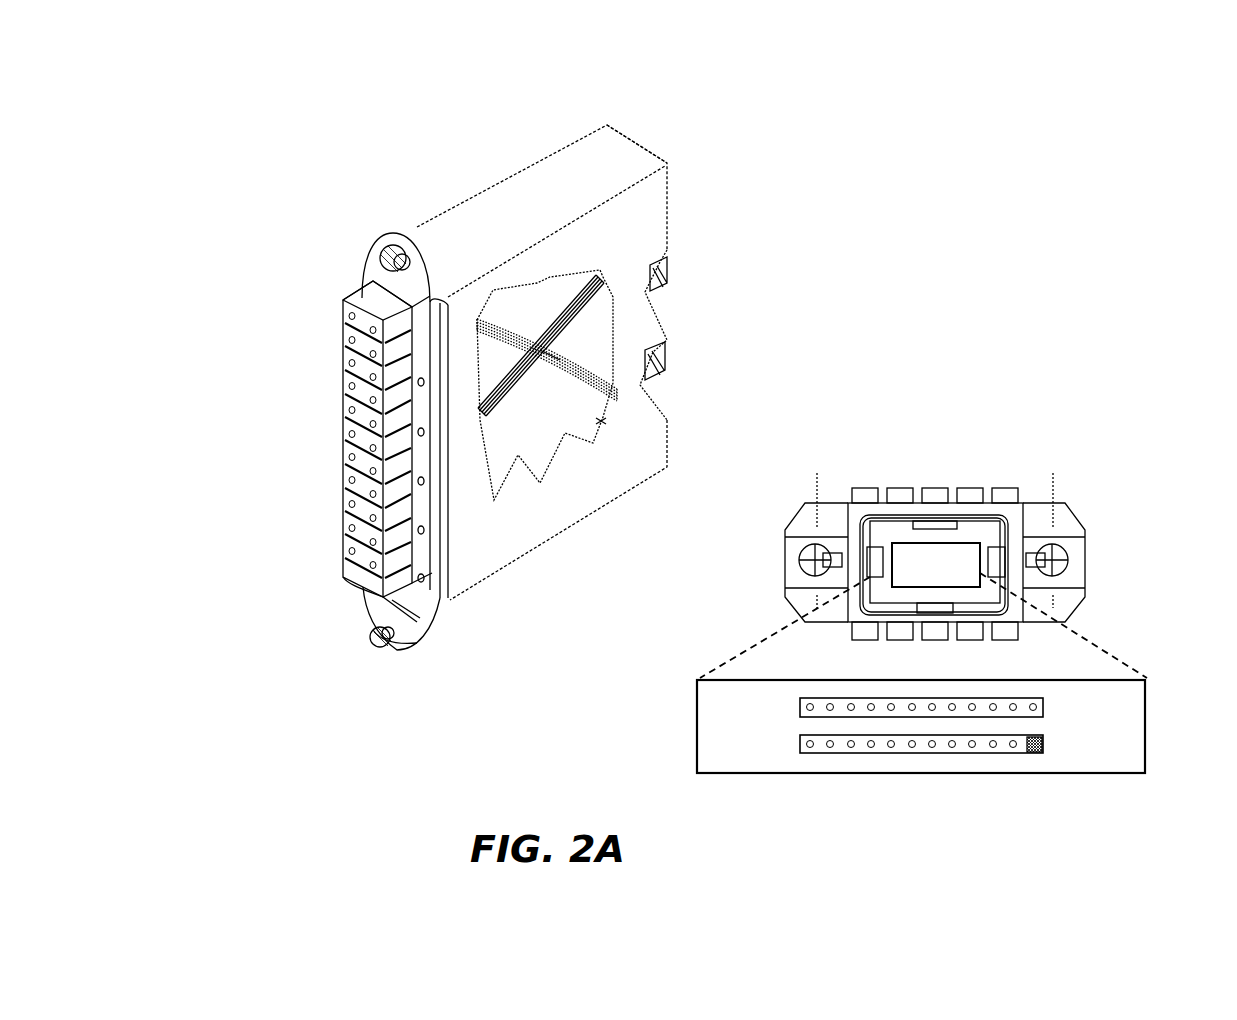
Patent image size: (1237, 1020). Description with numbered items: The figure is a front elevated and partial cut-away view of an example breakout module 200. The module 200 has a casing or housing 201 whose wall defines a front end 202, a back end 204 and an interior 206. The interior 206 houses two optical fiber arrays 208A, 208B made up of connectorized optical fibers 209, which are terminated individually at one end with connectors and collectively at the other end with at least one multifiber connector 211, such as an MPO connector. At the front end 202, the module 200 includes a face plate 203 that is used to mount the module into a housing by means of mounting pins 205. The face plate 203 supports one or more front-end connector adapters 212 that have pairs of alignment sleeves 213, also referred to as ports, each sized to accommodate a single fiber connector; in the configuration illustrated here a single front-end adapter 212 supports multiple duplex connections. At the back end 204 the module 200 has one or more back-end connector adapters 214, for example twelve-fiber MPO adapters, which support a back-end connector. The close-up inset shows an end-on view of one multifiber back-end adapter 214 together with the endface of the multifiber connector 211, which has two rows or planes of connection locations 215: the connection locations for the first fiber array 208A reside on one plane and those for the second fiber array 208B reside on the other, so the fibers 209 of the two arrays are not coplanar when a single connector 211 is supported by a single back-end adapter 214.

The breakout module 200 is at (641, 120).
The casing or housing 201 is at (550, 192).
The front end 202 is at (297, 322).
The face plate 203 is at (376, 236).
The back end 204 is at (672, 230).
The mounting pins 205 is at (372, 649).
The interior 206 is at (598, 422).
The first optical fiber array 208A is at (550, 303).
The second optical fiber array 208B is at (573, 402).
The connectorized optical fibers 209 is at (575, 322).
The multifiber connector 211 is at (686, 731).
The front-end connector adapter 212 is at (364, 289).
The alignment sleeves 213 is at (343, 418).
The back-end connector adapter 214 is at (652, 292).
The connection locations 215 is at (788, 709).